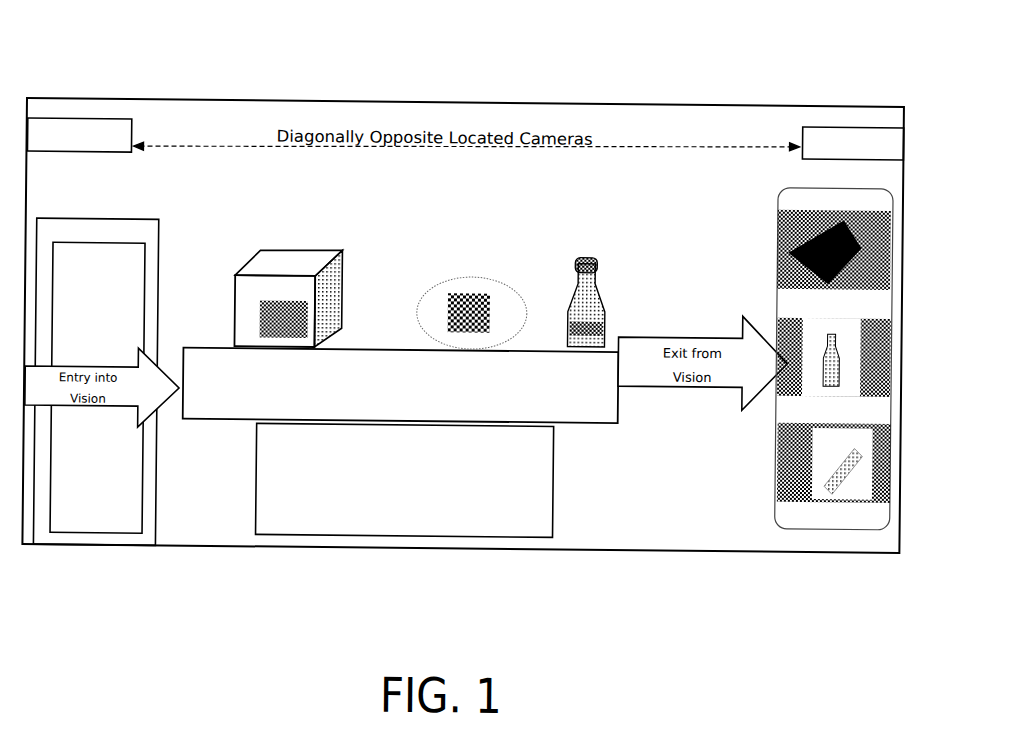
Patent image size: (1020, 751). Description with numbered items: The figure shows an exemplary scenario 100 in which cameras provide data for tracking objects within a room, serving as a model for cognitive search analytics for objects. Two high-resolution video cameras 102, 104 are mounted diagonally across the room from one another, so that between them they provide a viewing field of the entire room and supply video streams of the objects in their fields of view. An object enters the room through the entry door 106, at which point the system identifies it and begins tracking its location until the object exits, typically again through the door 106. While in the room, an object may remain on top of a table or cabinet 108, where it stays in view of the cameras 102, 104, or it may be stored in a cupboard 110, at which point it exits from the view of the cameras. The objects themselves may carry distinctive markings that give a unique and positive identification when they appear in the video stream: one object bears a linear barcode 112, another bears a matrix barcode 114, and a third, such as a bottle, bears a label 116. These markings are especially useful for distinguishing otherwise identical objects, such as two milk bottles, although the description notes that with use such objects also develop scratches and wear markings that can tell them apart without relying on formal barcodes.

The kitchen environment / system 100 is at (815, 32).
The video camera 102 is at (118, 144).
The video camera 104 is at (802, 137).
The entry door 106 is at (132, 256).
The table or cabinet 108 is at (250, 421).
The cupboard 110 is at (776, 457).
The linear barcode 112 is at (299, 297).
The matrix barcode 114 is at (492, 288).
The label 116 is at (594, 312).